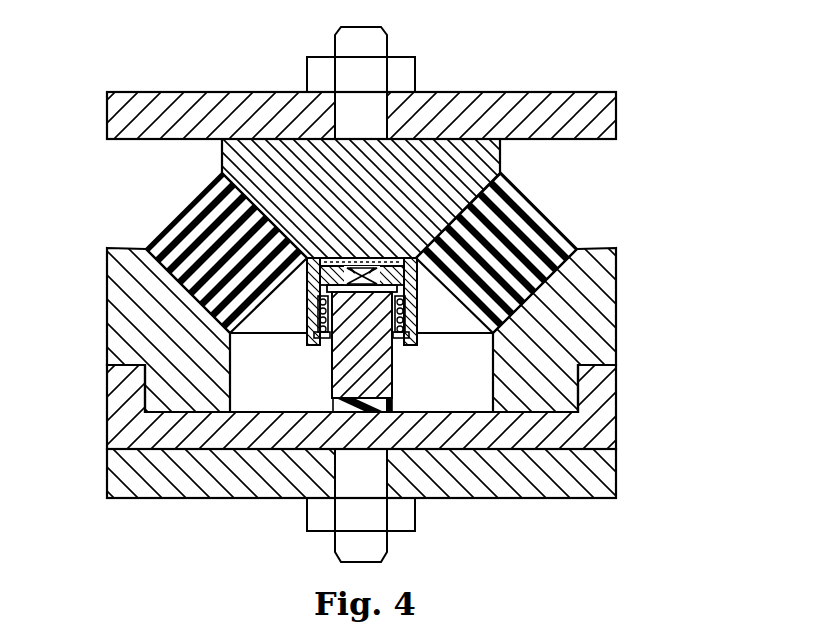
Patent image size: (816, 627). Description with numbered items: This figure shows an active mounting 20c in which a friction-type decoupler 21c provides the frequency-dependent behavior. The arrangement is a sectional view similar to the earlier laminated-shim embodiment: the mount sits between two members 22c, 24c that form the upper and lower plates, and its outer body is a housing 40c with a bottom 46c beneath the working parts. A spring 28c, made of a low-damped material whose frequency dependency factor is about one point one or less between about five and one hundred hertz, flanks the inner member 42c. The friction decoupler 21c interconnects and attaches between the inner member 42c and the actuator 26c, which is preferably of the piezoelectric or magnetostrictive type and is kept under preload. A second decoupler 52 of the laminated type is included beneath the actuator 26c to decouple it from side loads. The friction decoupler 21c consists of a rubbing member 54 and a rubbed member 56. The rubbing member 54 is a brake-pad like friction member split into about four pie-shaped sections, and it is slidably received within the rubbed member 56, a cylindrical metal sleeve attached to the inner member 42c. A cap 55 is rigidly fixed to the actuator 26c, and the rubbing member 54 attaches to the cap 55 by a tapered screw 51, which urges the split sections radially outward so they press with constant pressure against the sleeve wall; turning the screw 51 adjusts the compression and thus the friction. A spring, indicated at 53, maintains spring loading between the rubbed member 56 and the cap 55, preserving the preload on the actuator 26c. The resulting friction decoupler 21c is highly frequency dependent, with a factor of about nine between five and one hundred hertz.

The mounting 20c is at (385, 313).
The friction decoupler 21c is at (292, 320).
The upper plate 22c is at (616, 112).
The lower plate 24c is at (616, 477).
The actuator 26c is at (332, 368).
The spring 28c is at (530, 204).
The housing 40c is at (646, 284).
The inner member 42c is at (222, 170).
The base ring 46c is at (616, 398).
The screw 51 is at (368, 262).
The second decoupler 52 is at (394, 406).
The right spring 53 is at (416, 338).
The rubbing member 54 is at (412, 283).
The cap 55 is at (402, 352).
The rubbed member 56 is at (316, 336).